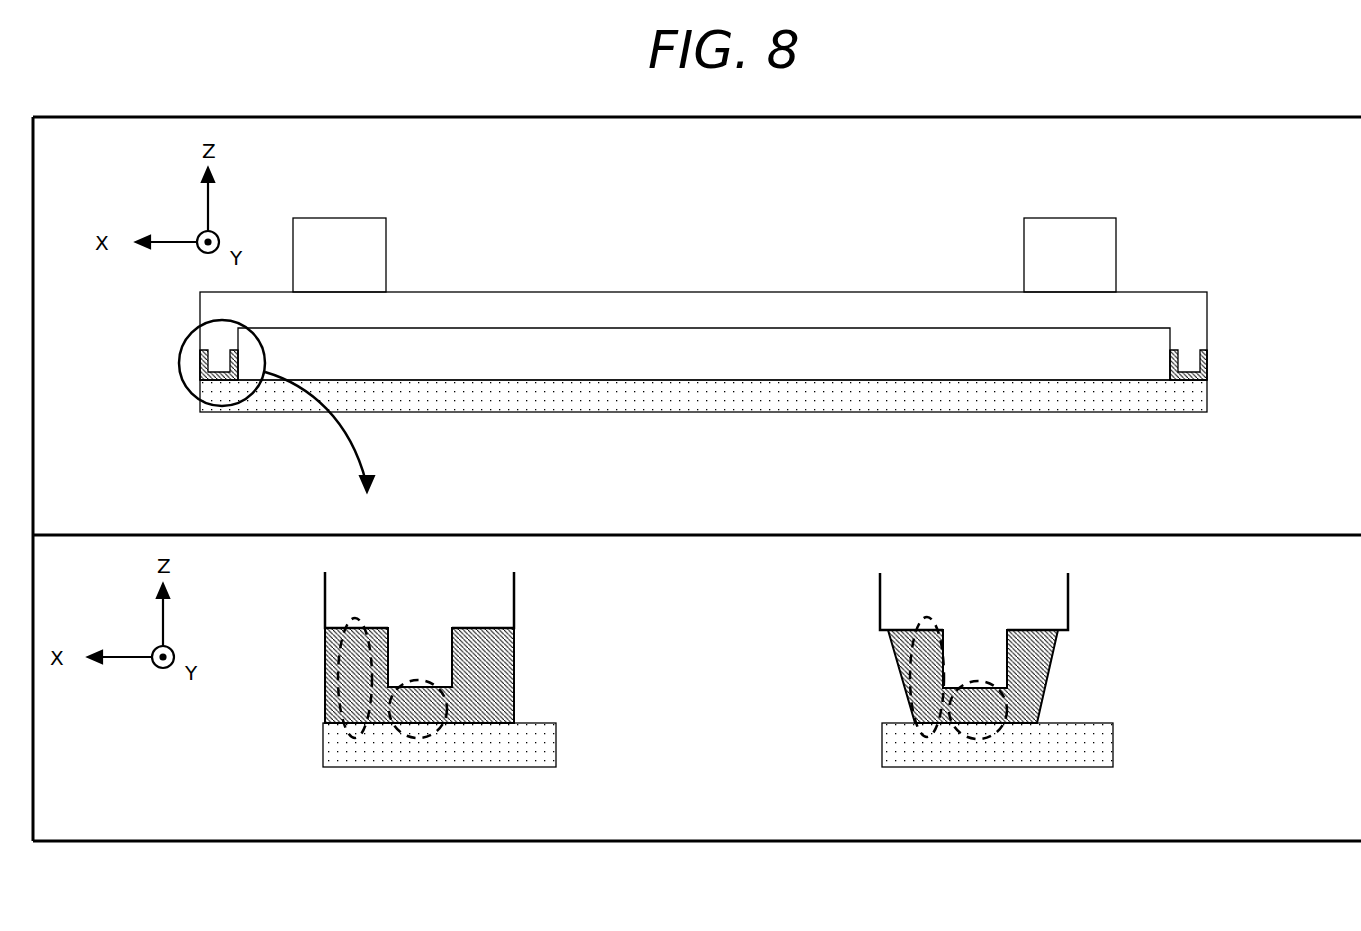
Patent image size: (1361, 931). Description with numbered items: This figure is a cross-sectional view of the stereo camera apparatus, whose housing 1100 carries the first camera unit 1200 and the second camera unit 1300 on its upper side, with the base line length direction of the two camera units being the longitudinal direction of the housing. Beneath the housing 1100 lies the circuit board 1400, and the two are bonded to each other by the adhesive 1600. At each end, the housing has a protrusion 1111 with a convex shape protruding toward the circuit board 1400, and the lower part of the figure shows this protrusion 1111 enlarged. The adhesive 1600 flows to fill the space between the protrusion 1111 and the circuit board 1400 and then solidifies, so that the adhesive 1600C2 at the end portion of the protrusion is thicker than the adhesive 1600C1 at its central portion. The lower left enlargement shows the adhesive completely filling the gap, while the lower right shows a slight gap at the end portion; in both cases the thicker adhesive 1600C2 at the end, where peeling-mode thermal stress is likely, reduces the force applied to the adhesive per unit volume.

The housing 1100 is at (720, 310).
The first camera unit 1200 is at (1103, 237).
The second camera unit 1300 is at (372, 238).
The circuit board 1400 is at (695, 393).
The protrusion 1111 is at (220, 347).
The adhesive 1600 is at (200, 373).
The adhesive at the end portion of the protrusion 1600C2 is at (338, 648).
The adhesive at the central portion of the protrusion 1600C1 is at (400, 707).